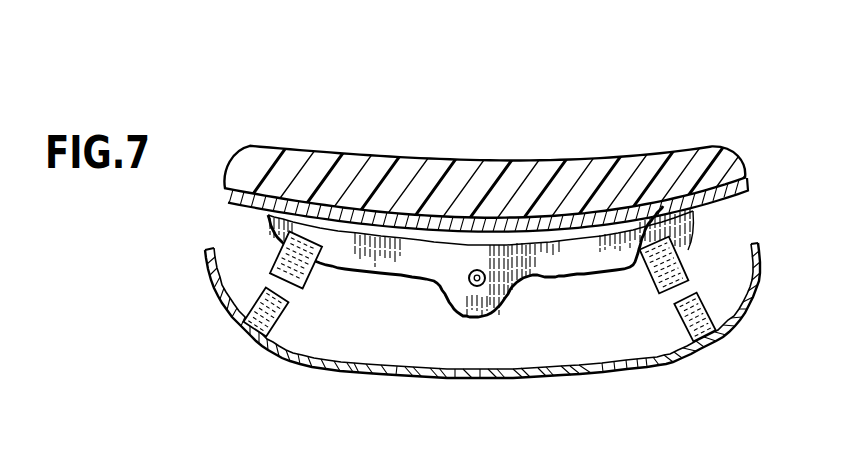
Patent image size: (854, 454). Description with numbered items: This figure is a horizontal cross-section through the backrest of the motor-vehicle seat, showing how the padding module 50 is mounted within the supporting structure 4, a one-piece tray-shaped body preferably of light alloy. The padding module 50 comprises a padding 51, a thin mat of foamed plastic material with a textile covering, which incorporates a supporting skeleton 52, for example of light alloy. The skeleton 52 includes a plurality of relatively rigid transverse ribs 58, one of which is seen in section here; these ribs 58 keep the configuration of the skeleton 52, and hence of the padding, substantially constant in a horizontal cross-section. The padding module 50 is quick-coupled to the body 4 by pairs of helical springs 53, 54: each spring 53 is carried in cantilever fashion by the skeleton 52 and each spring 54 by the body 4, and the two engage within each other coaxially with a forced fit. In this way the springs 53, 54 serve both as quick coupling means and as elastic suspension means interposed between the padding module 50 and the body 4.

The supporting structure 4 is at (201, 264).
The padding module 50 is at (499, 156).
The padding 51 is at (453, 183).
The supporting skeleton 52 is at (532, 225).
The helical spring 53 is at (303, 287).
The helical spring 54 is at (282, 325).
The transverse rib 58 is at (587, 255).